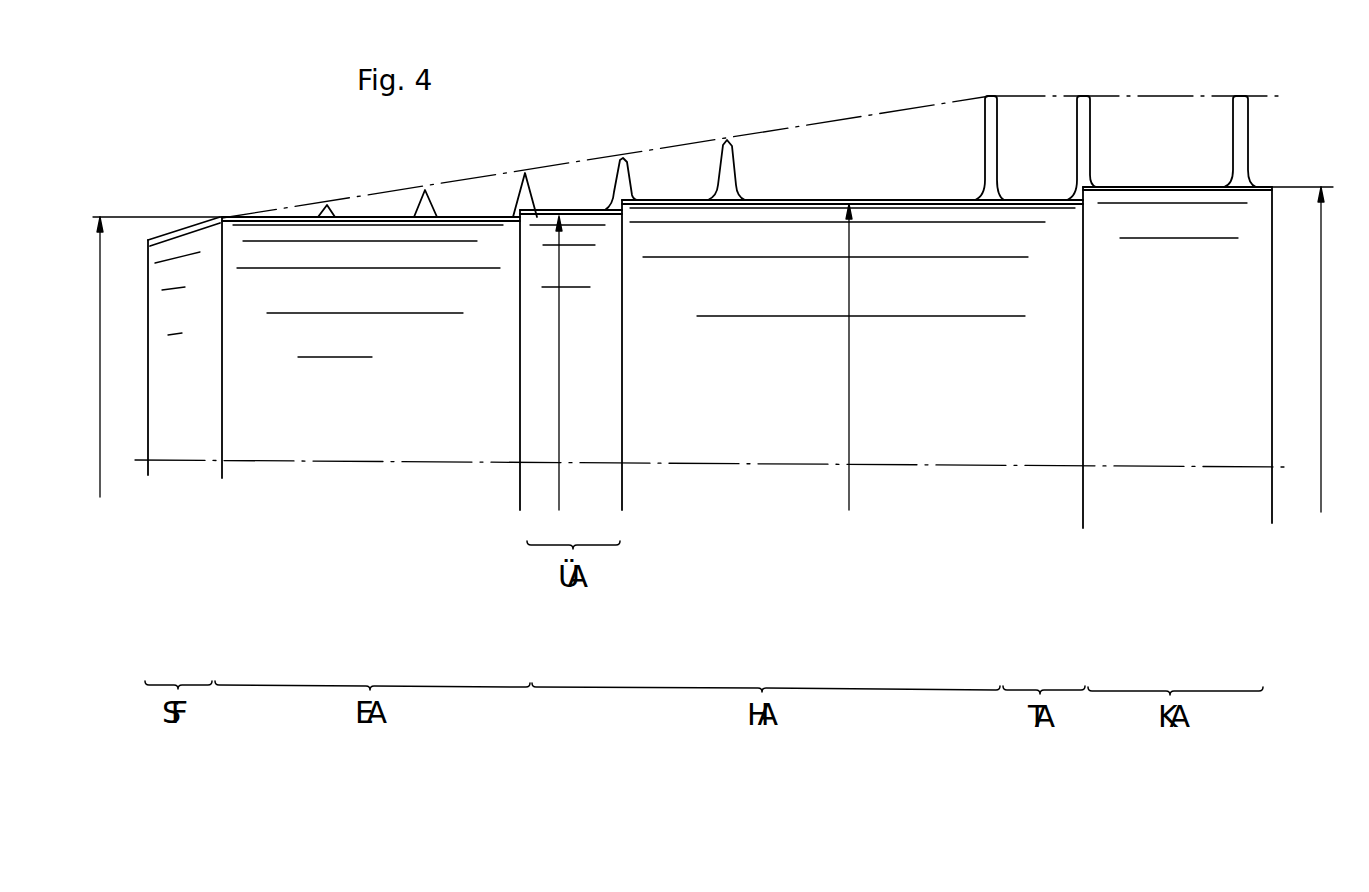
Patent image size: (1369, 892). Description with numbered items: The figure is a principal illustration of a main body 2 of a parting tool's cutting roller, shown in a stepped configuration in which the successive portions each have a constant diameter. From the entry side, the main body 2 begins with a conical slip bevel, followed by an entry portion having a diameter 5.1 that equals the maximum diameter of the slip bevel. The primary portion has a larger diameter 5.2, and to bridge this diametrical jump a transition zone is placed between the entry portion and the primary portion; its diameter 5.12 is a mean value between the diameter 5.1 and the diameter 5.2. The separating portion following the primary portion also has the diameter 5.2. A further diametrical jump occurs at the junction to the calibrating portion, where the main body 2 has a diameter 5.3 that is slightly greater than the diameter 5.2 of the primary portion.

The main body 2 is at (1247, 448).
The diameter of the entry portion 5.1 is at (100, 453).
The diameter of the transition zone 5.12 is at (557, 387).
The diameter of the primary portion 5.2 is at (812, 294).
The diameter of the calibrating portion 5.3 is at (1321, 413).